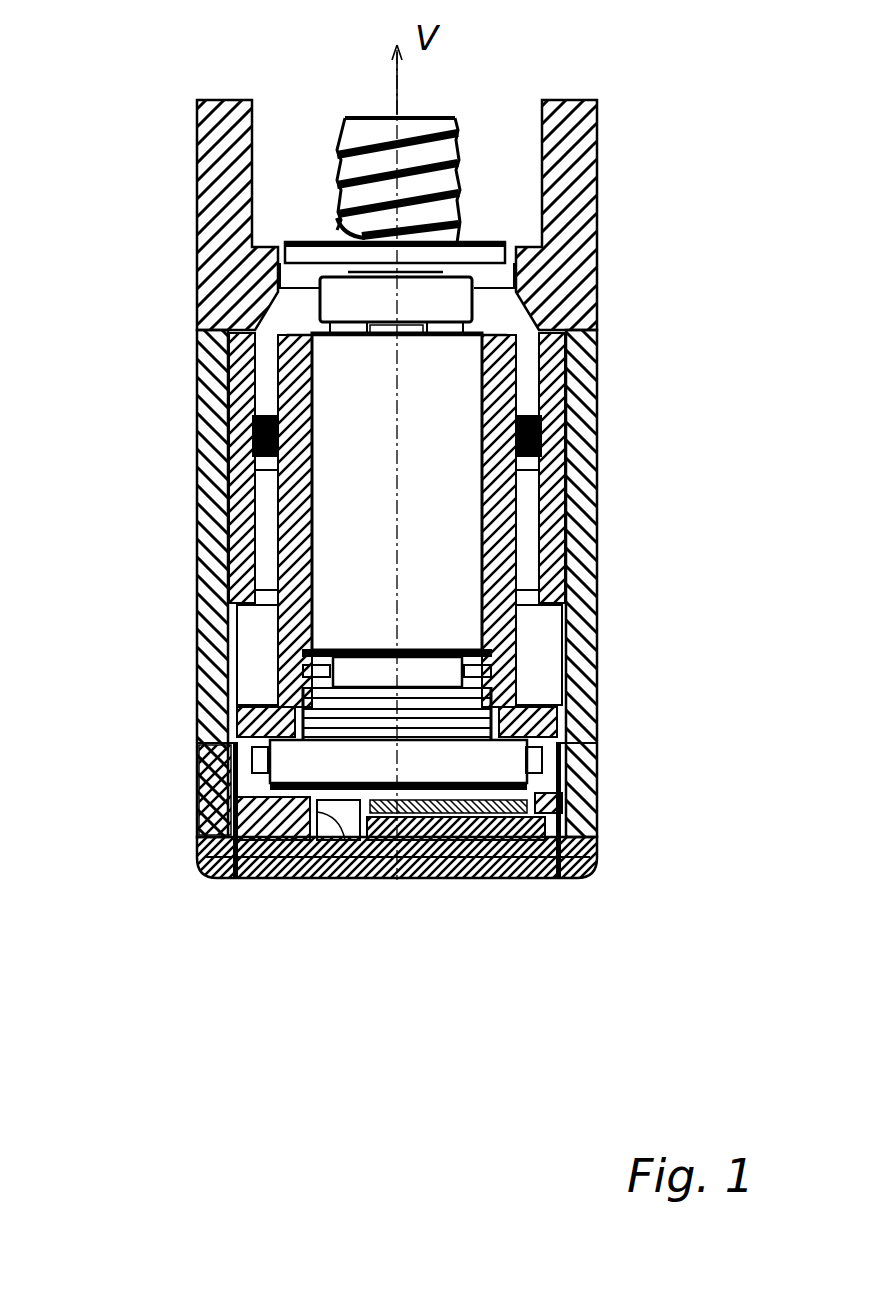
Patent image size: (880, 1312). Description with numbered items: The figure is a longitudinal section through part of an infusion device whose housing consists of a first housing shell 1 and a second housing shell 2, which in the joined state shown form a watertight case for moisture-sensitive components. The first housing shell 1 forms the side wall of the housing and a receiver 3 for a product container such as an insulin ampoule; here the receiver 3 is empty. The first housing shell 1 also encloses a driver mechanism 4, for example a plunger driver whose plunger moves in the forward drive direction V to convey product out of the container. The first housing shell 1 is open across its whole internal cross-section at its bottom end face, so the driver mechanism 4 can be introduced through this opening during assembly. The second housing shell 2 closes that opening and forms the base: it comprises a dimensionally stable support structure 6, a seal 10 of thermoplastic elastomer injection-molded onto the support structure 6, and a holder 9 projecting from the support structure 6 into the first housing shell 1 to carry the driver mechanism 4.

The first housing shell 1 is at (598, 277).
The second housing shell 2 is at (528, 886).
The receiver 3 is at (286, 112).
The driver mechanism 4 is at (352, 383).
The support structure 6 is at (322, 874).
The holder 9 is at (520, 641).
The seal 10 is at (198, 856).